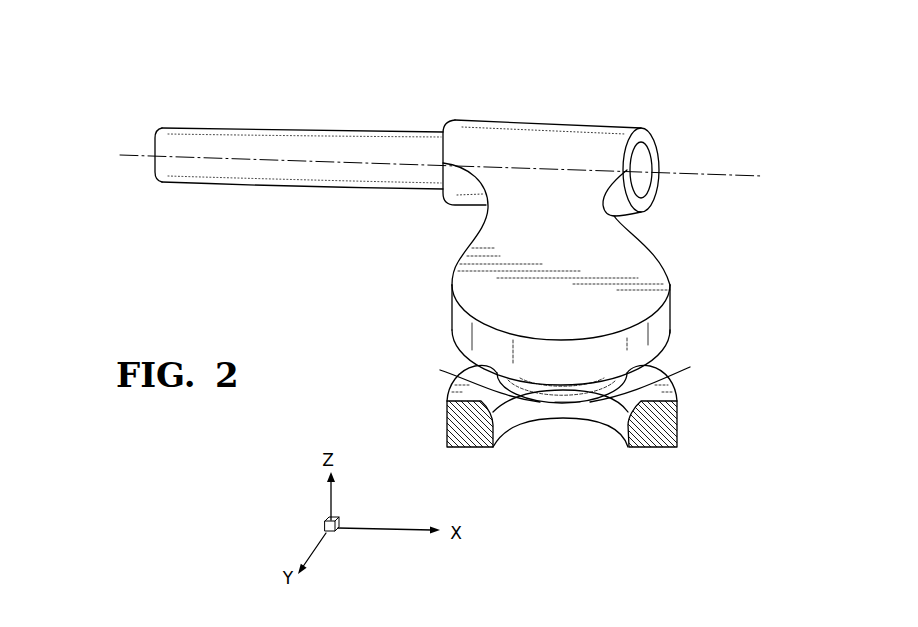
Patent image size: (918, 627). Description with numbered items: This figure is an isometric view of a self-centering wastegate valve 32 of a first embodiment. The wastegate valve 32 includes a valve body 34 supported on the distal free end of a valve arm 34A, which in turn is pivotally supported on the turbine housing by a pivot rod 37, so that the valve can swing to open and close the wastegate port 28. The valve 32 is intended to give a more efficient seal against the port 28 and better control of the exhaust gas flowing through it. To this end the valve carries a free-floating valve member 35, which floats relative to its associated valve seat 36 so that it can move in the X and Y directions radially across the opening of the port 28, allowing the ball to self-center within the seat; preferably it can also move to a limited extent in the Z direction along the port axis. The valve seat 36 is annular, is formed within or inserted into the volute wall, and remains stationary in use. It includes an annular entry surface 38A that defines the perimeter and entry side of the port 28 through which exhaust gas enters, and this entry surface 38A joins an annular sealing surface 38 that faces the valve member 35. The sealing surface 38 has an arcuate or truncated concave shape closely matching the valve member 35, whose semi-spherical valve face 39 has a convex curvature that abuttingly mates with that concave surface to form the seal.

The pivot rod 37 is at (262, 138).
The wastegate valve 32 is at (473, 93).
The valve arm 34A is at (507, 227).
The valve body 34 is at (465, 330).
The semi-spherical valve face 39 is at (488, 387).
The annular sealing surface 38 is at (640, 376).
The valve seat 36 is at (677, 421).
The annular entry surface 38A is at (625, 430).
The wastegate port 28 is at (530, 448).
The free-floating valve member 35 is at (569, 388).